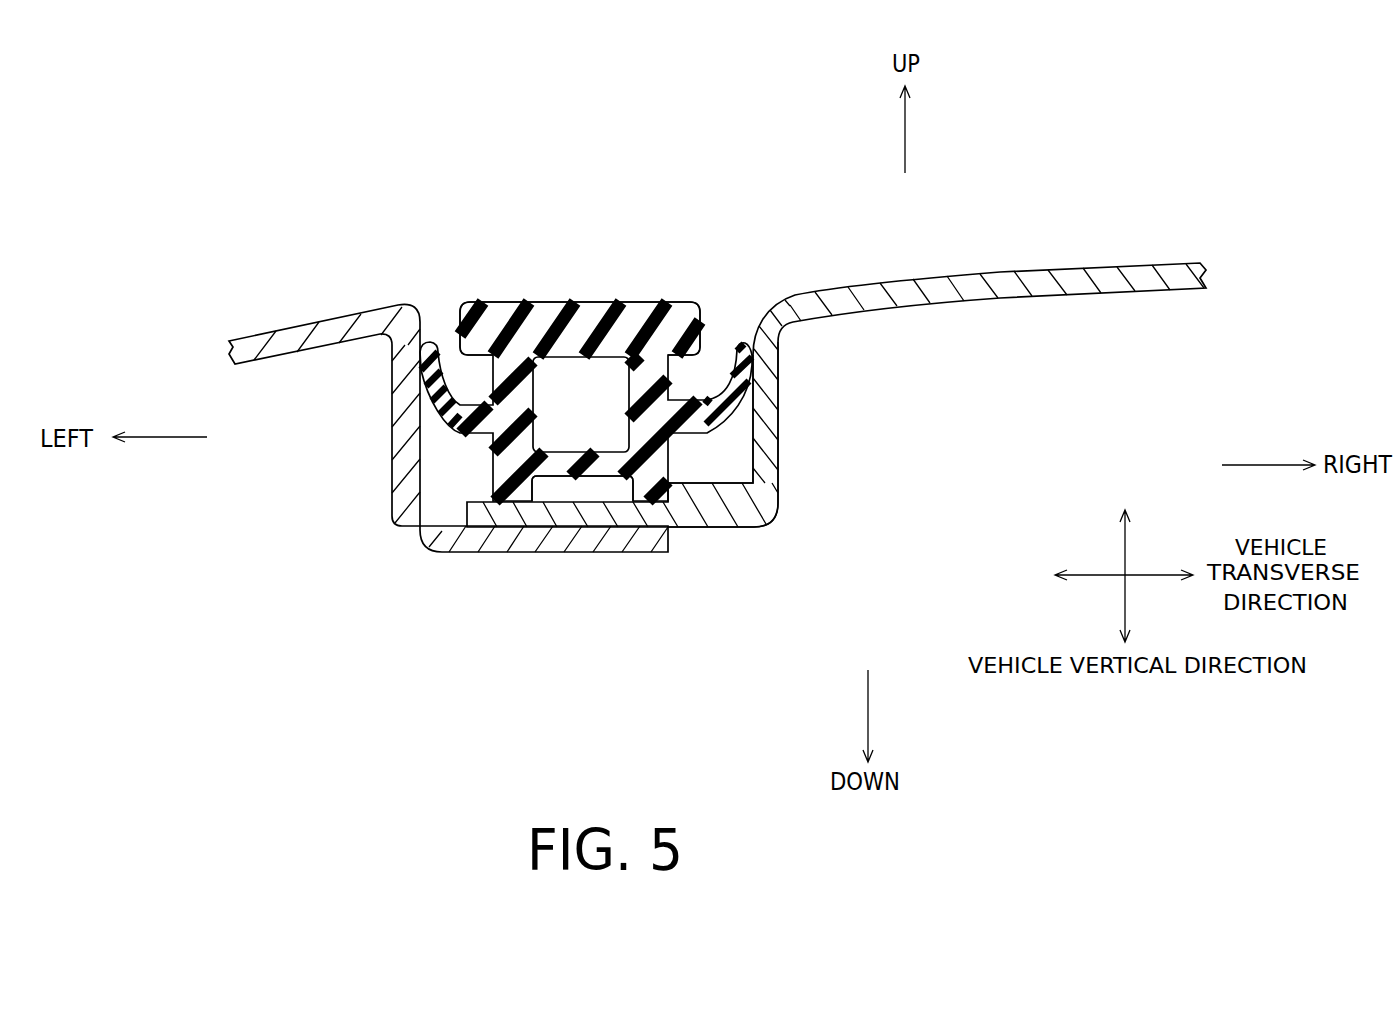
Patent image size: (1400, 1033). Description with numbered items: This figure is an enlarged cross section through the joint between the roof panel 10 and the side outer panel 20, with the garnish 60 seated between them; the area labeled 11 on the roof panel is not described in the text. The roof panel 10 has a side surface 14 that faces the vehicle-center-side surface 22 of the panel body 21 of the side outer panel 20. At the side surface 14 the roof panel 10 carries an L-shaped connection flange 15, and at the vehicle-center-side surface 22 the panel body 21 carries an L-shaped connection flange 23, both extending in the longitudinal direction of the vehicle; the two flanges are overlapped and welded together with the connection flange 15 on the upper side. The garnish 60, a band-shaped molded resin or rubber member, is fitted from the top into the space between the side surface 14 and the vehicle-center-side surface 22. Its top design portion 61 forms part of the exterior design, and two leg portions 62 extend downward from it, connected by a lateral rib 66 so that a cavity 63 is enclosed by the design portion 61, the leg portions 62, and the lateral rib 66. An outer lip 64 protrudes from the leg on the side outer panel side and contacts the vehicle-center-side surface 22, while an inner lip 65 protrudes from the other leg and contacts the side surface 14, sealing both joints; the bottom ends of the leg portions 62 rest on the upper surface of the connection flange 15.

The roof panel 10 is at (1030, 270).
The flange portion of first member 11 is at (1126, 265).
The side surface 14 is at (755, 328).
The connection flange 15 is at (697, 528).
The side outer panel 20 is at (403, 401).
The panel body 21 is at (272, 320).
The vehicle-center-side surface 22 is at (425, 327).
The connection flange 23 is at (452, 552).
The garnish 60 is at (553, 245).
The design portion 61 is at (598, 302).
The leg portions 62 is at (730, 528).
The cavity 63 is at (580, 430).
The outer lip 64 is at (455, 430).
The inner lip 65 is at (713, 425).
The lateral rib 66 is at (600, 470).